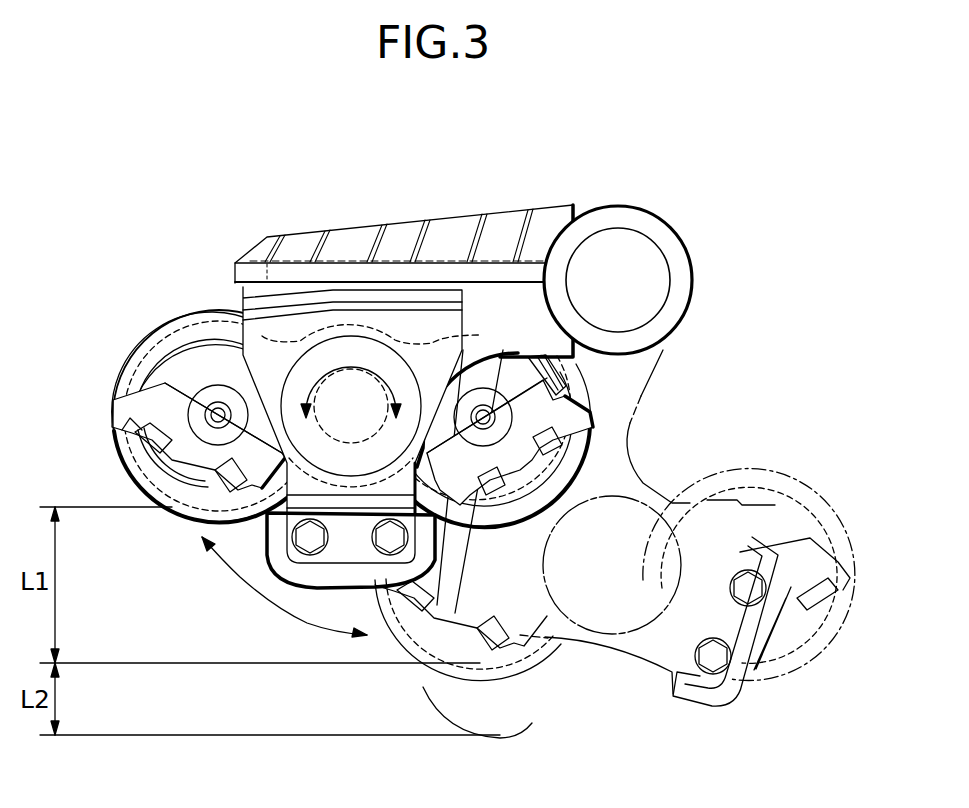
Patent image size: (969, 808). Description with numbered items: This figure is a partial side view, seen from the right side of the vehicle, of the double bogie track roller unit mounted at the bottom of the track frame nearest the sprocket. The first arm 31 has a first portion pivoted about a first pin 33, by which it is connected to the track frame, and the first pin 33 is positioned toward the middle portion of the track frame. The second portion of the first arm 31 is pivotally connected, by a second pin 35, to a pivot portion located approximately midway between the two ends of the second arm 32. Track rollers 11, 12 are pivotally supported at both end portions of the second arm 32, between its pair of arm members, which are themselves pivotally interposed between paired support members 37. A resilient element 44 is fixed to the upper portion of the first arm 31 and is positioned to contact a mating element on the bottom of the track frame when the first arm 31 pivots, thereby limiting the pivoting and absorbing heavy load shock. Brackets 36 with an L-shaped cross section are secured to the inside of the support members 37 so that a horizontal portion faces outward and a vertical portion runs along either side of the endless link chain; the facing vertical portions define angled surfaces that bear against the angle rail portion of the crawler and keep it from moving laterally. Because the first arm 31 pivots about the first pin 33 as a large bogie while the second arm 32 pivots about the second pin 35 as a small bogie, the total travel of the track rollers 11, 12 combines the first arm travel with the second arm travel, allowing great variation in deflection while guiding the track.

The track roller 11 is at (596, 452).
The track roller 12 is at (126, 366).
The first arm 31 is at (258, 352).
The second arm 32 is at (182, 360).
The first pin 33 is at (662, 280).
The second pin 35 is at (135, 450).
The bracket 36 is at (277, 532).
The support member 37 is at (338, 513).
The resilient element 44 is at (292, 247).